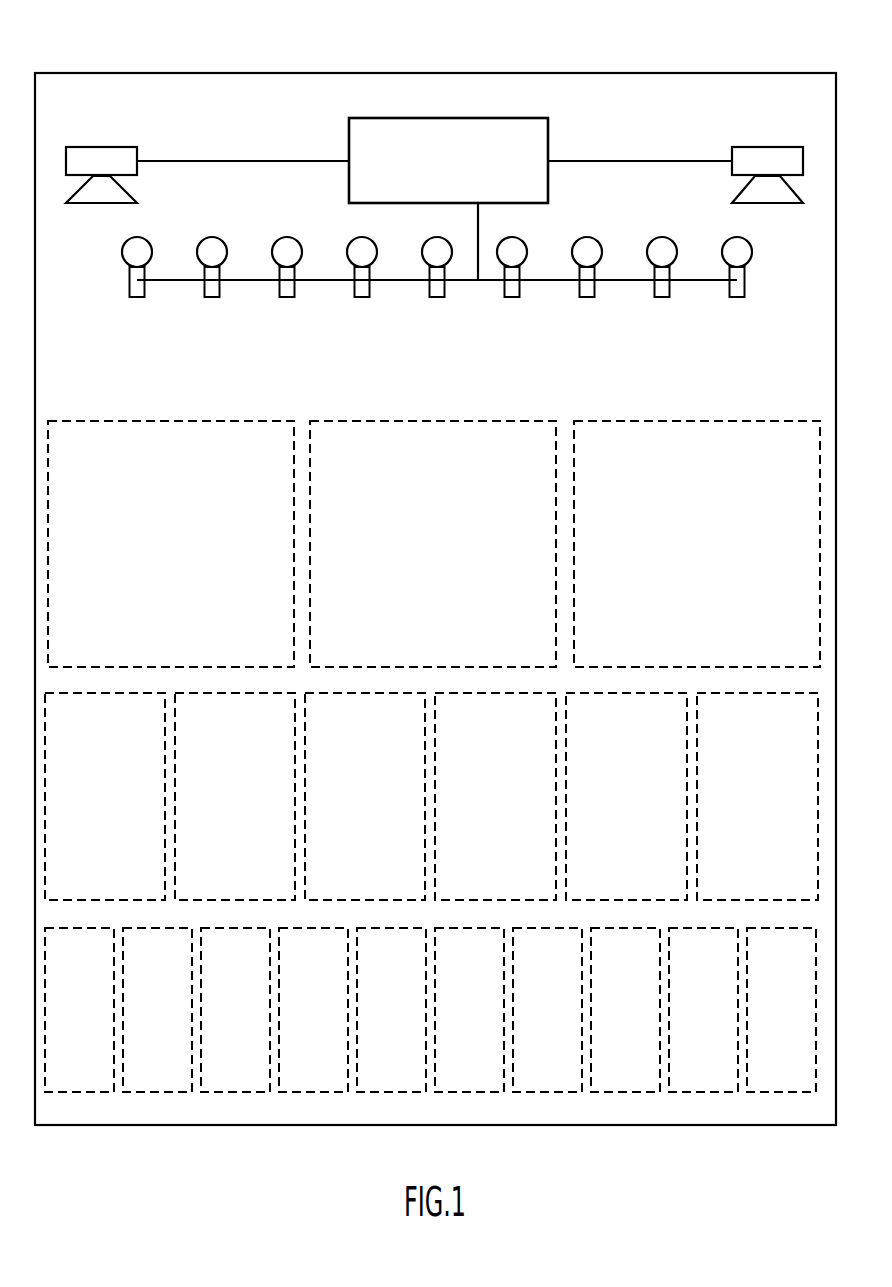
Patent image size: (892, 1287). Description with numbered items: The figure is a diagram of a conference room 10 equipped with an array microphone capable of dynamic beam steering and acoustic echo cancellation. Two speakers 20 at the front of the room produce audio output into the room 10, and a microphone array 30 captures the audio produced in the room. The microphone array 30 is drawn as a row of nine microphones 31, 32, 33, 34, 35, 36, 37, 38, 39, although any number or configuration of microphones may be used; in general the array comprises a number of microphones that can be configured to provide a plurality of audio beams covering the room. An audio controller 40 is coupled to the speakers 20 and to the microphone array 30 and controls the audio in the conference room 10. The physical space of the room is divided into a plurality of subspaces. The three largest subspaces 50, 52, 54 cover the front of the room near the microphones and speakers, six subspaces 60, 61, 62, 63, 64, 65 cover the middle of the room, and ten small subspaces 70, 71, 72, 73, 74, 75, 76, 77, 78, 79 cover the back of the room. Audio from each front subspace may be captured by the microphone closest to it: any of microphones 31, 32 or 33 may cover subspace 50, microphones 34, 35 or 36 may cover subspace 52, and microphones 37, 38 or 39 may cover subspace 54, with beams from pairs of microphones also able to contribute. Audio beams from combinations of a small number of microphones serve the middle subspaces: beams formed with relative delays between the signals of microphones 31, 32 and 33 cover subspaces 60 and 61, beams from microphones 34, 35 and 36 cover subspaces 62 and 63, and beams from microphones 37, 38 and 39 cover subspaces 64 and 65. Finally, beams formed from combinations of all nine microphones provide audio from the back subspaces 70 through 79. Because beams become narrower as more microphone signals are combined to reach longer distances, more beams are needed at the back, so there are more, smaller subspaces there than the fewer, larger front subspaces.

The conference room 10 is at (128, 72).
The speakers 20 is at (104, 147).
The microphone array 30 is at (437, 291).
The microphone 31 is at (122, 252).
The microphone 32 is at (198, 252).
The microphone 33 is at (273, 252).
The microphone 34 is at (348, 252).
The microphone 35 is at (423, 252).
The microphone 36 is at (526, 252).
The microphone 37 is at (601, 252).
The microphone 38 is at (676, 252).
The microphone 39 is at (752, 267).
The audio controller 40 is at (349, 142).
The subspace 50 is at (159, 550).
The subspace 52 is at (423, 550).
The subspace 54 is at (686, 550).
The subspace 60 is at (96, 800).
The subspace 61 is at (226, 800).
The subspace 62 is at (356, 800).
The subspace 63 is at (487, 800).
The subspace 64 is at (618, 800).
The subspace 65 is at (749, 800).
The subspace 70 is at (70, 1018).
The subspace 71 is at (148, 1018).
The subspace 72 is at (226, 1018).
The subspace 73 is at (304, 1018).
The subspace 74 is at (382, 1018).
The subspace 75 is at (460, 1018).
The subspace 76 is at (538, 1018).
The subspace 77 is at (616, 1018).
The subspace 78 is at (694, 1018).
The subspace 79 is at (772, 1018).